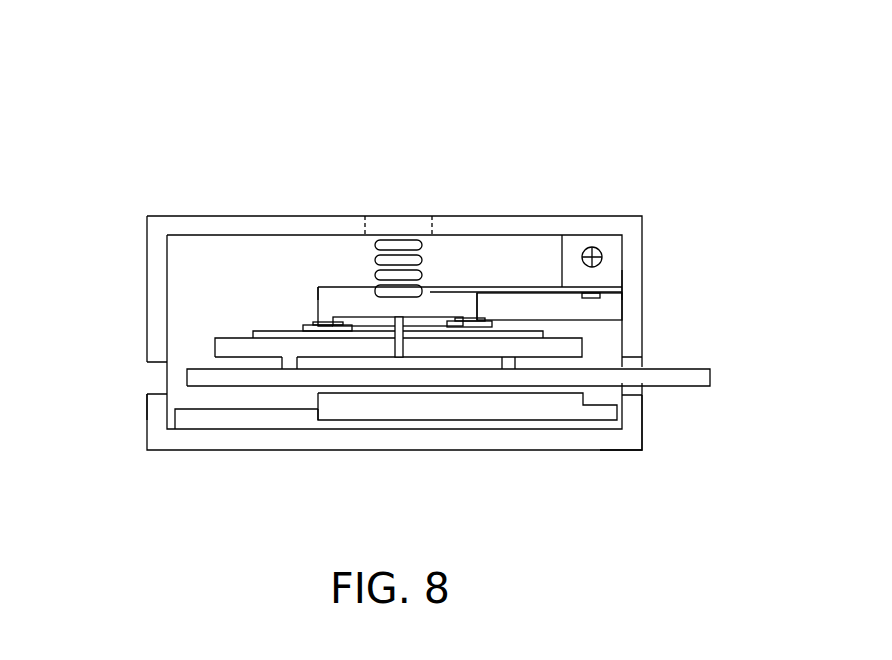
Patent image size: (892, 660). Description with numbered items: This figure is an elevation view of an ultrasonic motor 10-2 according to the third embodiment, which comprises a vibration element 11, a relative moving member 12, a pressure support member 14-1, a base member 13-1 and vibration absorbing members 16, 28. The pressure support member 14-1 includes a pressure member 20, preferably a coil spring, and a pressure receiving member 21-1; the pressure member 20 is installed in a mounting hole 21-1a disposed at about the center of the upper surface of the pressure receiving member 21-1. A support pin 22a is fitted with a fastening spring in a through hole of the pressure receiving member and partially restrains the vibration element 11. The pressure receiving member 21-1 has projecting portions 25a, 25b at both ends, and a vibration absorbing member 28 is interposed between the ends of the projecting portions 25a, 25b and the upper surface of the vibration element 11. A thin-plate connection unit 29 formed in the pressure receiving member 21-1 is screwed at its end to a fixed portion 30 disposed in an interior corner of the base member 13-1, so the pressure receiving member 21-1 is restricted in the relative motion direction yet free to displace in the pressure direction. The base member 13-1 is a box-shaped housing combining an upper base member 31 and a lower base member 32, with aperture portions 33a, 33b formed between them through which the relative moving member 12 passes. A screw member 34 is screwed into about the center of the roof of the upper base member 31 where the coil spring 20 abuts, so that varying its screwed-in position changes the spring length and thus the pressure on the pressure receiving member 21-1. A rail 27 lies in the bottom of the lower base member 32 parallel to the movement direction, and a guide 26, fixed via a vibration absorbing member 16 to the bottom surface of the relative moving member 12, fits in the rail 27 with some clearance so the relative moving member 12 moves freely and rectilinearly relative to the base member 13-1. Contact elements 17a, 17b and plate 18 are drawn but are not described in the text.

The ultrasonic motor 10-2 is at (180, 130).
The vibration element 11 is at (230, 325).
The relative moving member 12 is at (705, 354).
The base member 13-1 is at (656, 233).
The pressure support member 14-1 is at (456, 256).
The vibration absorbing member 16 is at (428, 406).
The contact 17a is at (289, 363).
The contact 17b is at (508, 363).
The plate 18 is at (265, 332).
The pressure member 20 is at (373, 262).
The pressure receiving member 21-1 is at (448, 300).
The mounting hole 21-1a is at (437, 292).
The support pin 22a is at (398, 352).
The projecting portion 25a is at (318, 320).
The projecting portion 25b is at (478, 320).
The guide 26 is at (345, 410).
The rail 27 is at (598, 418).
The vibration absorbing member 28 is at (322, 327).
The connection unit 29 is at (535, 318).
The fixed portion 30 is at (609, 242).
The upper base member 31 is at (643, 283).
The lower base member 32 is at (643, 438).
The aperture portion 33a is at (147, 390).
The aperture portion 33b is at (643, 390).
The screw member 34 is at (402, 228).